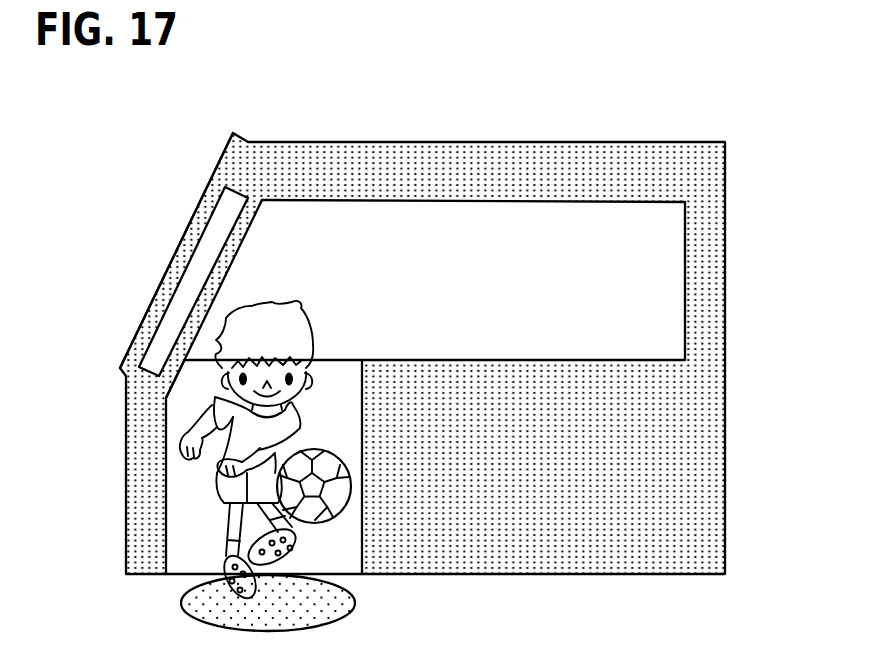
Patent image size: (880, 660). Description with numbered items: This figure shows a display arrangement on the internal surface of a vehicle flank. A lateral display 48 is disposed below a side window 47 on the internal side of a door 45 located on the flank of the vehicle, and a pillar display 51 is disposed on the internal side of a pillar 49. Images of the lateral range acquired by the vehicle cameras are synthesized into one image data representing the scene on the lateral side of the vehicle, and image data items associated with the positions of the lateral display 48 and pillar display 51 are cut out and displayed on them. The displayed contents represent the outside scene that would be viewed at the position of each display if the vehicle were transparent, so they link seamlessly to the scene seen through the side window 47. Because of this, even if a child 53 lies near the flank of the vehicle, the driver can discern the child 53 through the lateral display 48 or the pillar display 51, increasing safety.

The door 45 is at (672, 452).
The side window 47 is at (588, 250).
The lateral display 48 is at (176, 498).
The pillar 49 is at (238, 150).
The pillar display 51 is at (168, 300).
The child 53 is at (303, 323).